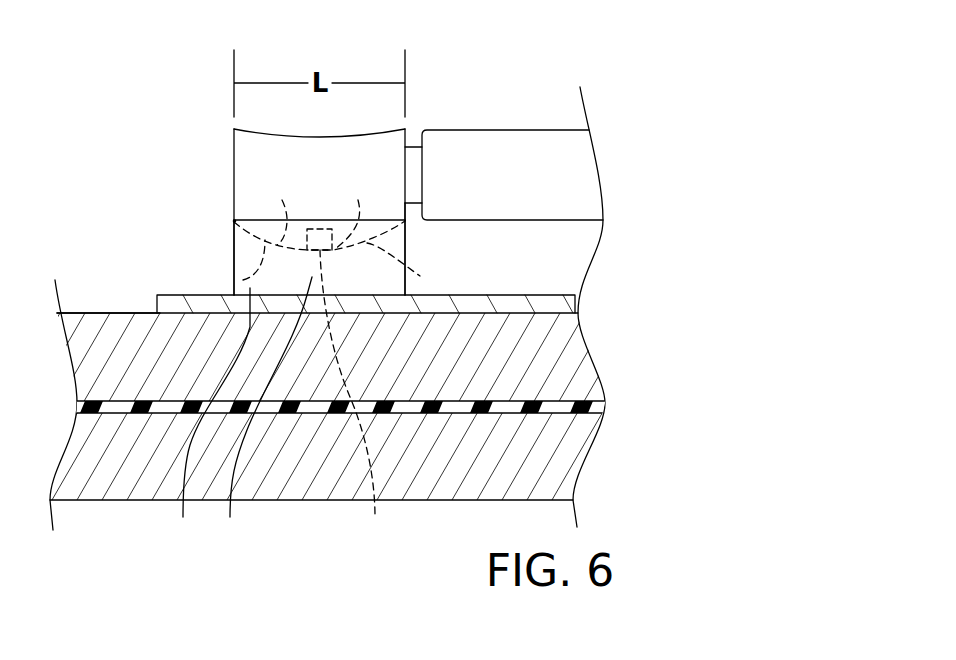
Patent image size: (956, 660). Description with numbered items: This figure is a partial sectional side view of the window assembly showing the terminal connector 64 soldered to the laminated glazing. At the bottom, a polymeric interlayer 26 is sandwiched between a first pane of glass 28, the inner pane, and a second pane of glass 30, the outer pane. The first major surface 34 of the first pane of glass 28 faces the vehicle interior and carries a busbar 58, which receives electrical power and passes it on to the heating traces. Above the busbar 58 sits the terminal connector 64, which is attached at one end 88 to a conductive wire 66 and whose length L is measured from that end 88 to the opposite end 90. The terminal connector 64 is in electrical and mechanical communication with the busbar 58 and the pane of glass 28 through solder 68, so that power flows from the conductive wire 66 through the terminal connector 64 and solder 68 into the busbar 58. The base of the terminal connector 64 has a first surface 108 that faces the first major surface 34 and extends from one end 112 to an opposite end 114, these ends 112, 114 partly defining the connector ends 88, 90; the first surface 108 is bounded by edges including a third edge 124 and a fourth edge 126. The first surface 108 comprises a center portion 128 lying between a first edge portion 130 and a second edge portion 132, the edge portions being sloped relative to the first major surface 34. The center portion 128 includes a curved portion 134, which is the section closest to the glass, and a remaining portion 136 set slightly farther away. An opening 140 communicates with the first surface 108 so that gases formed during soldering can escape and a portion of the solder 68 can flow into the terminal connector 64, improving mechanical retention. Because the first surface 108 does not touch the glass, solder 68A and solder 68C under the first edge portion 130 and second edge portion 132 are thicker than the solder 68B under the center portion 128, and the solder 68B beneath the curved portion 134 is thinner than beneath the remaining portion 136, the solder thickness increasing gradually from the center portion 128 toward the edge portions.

The polymeric interlayer 26 is at (592, 417).
The first pane of glass 28 is at (565, 363).
The second pane of glass 30 is at (570, 478).
The first major surface 34 is at (87, 313).
The busbar 58 is at (553, 295).
The terminal connector 64 is at (284, 198).
The conductive wire 66 is at (533, 143).
The solder 68 is at (209, 416).
The solder 68A is at (240, 262).
The solder 68B is at (260, 411).
The solder 68C is at (393, 240).
The end 88 is at (407, 137).
The opposite end 90 is at (233, 135).
The first surface 108 is at (233, 222).
The end 112 is at (470, 224).
The opposite end 114 is at (252, 203).
The third edge 124 is at (405, 221).
The fourth edge 126 is at (233, 222).
The center portion 128 is at (358, 200).
The first edge portion 130 is at (243, 280).
The second edge portion 132 is at (420, 276).
The curved portion 134 is at (359, 397).
The remaining portion 136 is at (282, 200).
The opening 140 is at (320, 229).